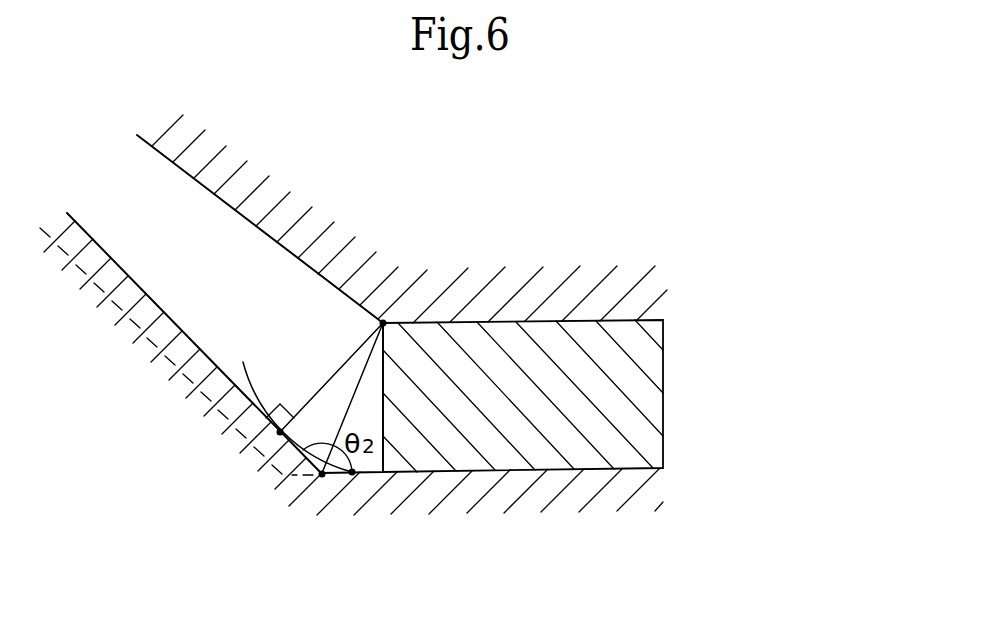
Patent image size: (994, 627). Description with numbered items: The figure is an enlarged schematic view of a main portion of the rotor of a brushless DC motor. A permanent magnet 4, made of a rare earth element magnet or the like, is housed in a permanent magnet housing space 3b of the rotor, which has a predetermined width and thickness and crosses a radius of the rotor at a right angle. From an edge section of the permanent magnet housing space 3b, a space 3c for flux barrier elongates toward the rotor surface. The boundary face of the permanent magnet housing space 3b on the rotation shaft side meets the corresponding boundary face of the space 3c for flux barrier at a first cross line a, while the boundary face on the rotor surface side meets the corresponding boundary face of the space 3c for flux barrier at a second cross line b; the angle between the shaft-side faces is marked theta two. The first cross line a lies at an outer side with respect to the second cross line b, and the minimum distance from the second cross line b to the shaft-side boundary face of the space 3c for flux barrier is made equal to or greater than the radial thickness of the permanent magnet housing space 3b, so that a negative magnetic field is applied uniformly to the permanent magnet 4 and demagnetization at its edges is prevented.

The space for flux barrier 3c is at (292, 284).
The permanent magnet 4 is at (535, 363).
The permanent magnet housing space 3b is at (398, 435).
The first cross line a is at (316, 492).
The second cross line b is at (390, 305).